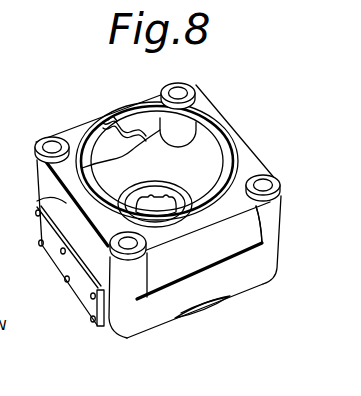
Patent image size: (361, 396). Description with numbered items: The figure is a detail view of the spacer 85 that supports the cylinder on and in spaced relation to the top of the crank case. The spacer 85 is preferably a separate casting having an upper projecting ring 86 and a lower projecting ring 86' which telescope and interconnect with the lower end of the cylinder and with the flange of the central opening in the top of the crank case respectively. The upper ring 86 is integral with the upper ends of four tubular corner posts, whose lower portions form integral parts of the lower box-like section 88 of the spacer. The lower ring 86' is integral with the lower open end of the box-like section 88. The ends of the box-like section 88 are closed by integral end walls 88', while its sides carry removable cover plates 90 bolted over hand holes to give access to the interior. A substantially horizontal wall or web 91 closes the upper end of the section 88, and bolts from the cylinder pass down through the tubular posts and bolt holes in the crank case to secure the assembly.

The spacer 85 is at (250, 288).
The upper projecting ring 86 is at (176, 161).
The lower projecting ring 86' is at (203, 326).
The lower box-like section 88 is at (195, 322).
The end walls 88' is at (204, 251).
The removable cover plates 90 is at (63, 262).
The horizontal wall or web 91 is at (167, 198).